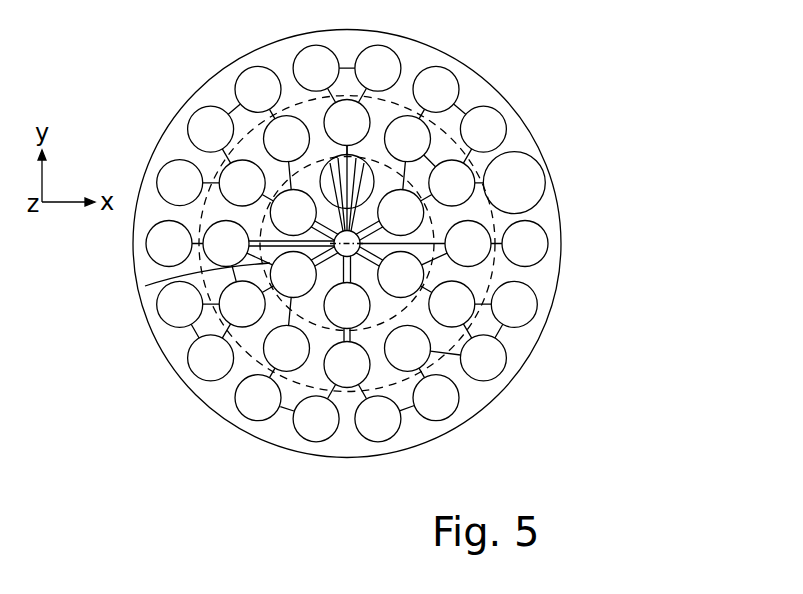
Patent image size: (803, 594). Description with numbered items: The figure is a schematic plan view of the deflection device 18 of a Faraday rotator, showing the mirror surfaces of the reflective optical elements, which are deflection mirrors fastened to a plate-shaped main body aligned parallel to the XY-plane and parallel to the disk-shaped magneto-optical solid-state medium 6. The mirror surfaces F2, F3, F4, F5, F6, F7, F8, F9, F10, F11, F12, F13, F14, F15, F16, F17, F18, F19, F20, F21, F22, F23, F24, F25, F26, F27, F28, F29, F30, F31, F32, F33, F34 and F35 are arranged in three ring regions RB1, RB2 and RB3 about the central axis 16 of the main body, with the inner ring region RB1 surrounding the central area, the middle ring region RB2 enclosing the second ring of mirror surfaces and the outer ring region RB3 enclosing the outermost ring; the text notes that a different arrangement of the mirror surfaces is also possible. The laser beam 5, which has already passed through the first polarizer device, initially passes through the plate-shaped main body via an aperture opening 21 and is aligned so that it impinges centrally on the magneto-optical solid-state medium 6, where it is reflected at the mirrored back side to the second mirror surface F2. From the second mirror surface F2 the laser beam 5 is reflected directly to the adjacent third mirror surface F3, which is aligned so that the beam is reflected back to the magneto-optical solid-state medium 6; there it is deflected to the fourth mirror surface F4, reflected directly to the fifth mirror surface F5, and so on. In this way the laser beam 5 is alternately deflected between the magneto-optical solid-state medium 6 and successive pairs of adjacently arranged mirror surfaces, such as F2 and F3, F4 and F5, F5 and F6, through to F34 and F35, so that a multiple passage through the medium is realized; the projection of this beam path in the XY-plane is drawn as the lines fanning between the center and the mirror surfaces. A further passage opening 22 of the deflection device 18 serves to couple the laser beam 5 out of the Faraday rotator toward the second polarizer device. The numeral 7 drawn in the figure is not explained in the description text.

The laser beam 5 is at (288, 411).
The magneto-optical solid-state medium 6 is at (270, 278).
The filling space 7 is at (221, 397).
The central axis 16 is at (341, 230).
The deflection device 18 is at (531, 95).
The aperture opening 21 is at (365, 163).
The passage opening 22 is at (520, 182).
The first ring region RB1 is at (297, 181).
The second ring region RB2 is at (213, 272).
The third ring region RB3 is at (172, 350).
The second mirror surface F2 is at (347, 306).
The third mirror surface F3 is at (293, 275).
The fourth mirror surface F4 is at (401, 213).
The fifth mirror surface F5 is at (401, 275).
The mirror surface F6 is at (293, 213).
The mirror surface F7 is at (242, 183).
The mirror surface F8 is at (452, 304).
The mirror surface F9 is at (408, 348).
The mirror surface F10 is at (287, 139).
The mirror surface F11 is at (347, 123).
The mirror surface F12 is at (347, 365).
The mirror surface F13 is at (287, 348).
The mirror surface F14 is at (408, 139).
The mirror surface F15 is at (452, 183).
The mirror surface F16 is at (242, 304).
The mirror surface F17 is at (226, 244).
The mirror surface F18 is at (468, 244).
The mirror surface F19 is at (525, 244).
The mirror surface F20 is at (169, 244).
The mirror surface F21 is at (180, 183).
The mirror surface F22 is at (514, 304).
The mirror surface F23 is at (483, 358).
The mirror surface F24 is at (211, 129).
The mirror surface F25 is at (258, 89).
The mirror surface F26 is at (436, 398).
The mirror surface F27 is at (378, 419).
The mirror surface F28 is at (316, 68).
The mirror surface F29 is at (378, 68).
The mirror surface F30 is at (316, 419).
The mirror surface F31 is at (258, 398).
The mirror surface F32 is at (436, 89).
The mirror surface F33 is at (483, 129).
The mirror surface F34 is at (211, 358).
The mirror surface F35 is at (180, 304).